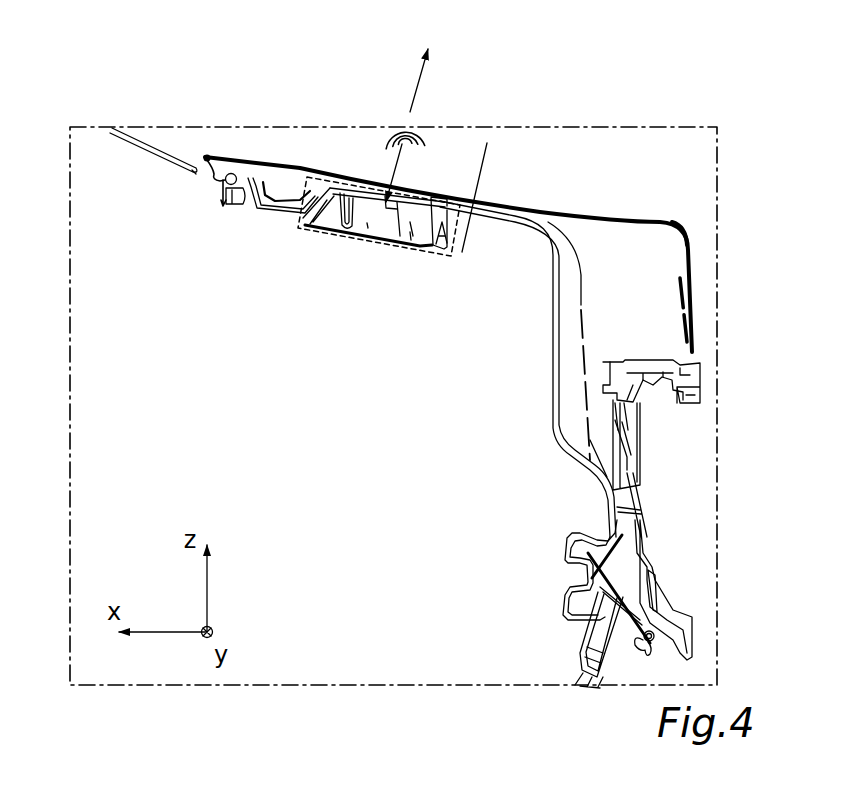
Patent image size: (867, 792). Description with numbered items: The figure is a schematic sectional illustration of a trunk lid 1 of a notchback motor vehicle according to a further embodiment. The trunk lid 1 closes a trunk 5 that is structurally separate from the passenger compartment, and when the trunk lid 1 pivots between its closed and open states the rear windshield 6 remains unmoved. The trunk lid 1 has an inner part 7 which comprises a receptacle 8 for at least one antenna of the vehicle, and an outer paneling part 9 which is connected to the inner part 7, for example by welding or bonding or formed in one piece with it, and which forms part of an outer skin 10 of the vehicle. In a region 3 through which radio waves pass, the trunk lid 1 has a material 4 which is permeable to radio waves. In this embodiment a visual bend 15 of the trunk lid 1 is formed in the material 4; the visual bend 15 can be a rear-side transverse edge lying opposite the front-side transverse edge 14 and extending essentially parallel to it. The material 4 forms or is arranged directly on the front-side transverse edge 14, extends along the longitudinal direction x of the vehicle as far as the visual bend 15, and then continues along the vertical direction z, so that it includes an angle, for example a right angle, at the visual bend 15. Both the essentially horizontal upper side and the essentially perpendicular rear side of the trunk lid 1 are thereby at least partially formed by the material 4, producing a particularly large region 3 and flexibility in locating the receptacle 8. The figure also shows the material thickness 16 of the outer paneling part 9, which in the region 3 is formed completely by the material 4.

The trunk lid 1 is at (651, 179).
The region through which radio waves pass 3 is at (493, 143).
The material which is permeable to radio waves 4 is at (524, 205).
The trunk 5 is at (360, 385).
The rear windshield 6 is at (157, 142).
The inner part 7 is at (585, 288).
The receptacle 8 is at (332, 221).
The outer paneling part 9 is at (698, 350).
The outer skin 10 is at (697, 308).
The front-side transverse edge 14 is at (208, 155).
The visual bend 15 is at (686, 236).
The material thickness 16 is at (467, 245).